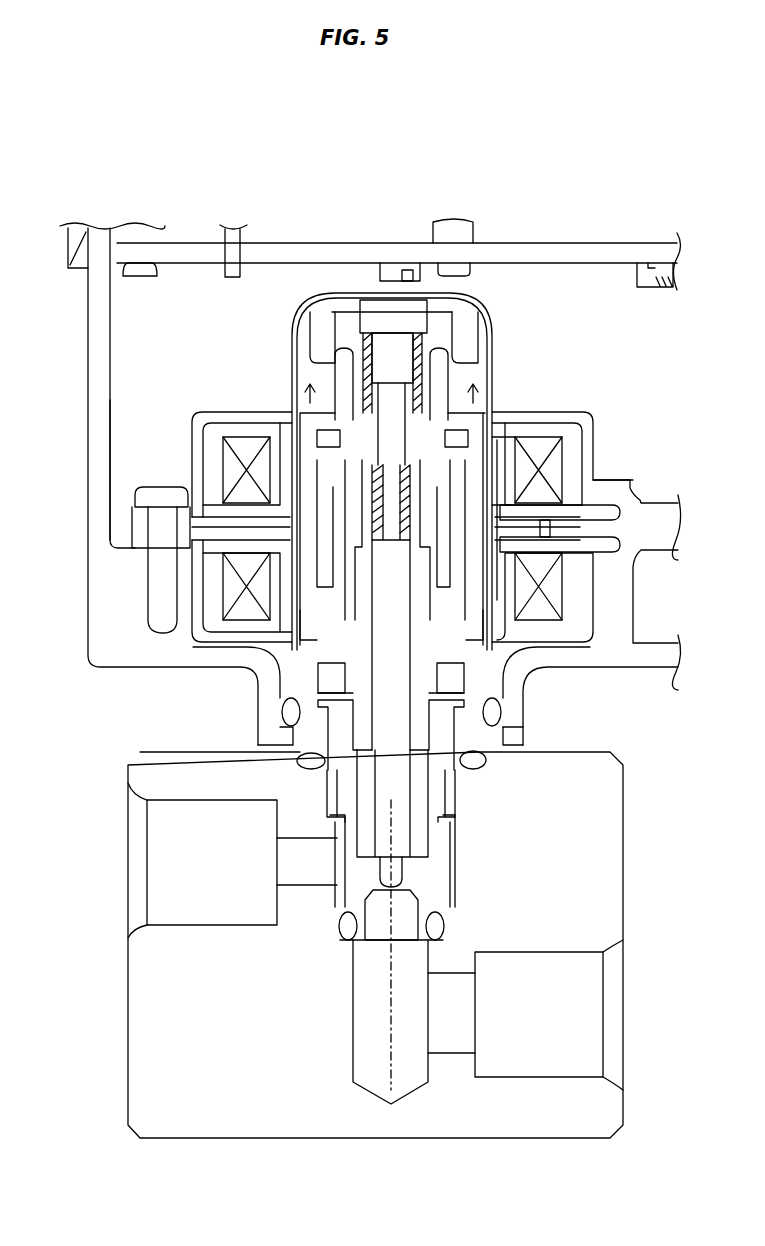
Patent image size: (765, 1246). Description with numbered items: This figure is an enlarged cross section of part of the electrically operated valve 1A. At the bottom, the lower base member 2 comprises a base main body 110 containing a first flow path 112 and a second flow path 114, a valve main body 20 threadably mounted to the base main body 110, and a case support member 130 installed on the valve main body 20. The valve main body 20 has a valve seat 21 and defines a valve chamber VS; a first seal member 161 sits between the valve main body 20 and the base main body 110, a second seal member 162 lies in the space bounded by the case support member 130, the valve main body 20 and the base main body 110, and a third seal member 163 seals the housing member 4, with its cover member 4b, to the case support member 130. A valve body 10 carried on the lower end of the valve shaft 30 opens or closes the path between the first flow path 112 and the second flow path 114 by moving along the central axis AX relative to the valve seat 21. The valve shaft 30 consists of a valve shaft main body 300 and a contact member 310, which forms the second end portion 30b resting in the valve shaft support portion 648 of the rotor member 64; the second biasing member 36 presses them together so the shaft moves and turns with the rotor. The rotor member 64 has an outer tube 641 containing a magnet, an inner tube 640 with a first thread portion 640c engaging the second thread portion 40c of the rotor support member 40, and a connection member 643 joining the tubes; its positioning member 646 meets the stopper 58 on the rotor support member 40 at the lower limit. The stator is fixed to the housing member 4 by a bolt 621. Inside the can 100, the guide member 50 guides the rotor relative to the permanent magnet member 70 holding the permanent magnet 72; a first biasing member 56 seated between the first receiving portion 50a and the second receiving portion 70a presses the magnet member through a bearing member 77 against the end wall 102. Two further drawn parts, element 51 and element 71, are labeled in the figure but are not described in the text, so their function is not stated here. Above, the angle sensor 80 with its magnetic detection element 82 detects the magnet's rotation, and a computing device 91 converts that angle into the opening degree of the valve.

The electrically operated valve 1A is at (462, 165).
The lower base member 2 is at (575, 820).
The housing member 4 is at (88, 500).
The cover member 4b is at (110, 500).
The valve body 10 is at (402, 868).
The valve main body 20 is at (355, 780).
The valve seat 21 is at (391, 872).
The valve shaft 30 is at (372, 640).
The second end portion 30b is at (320, 440).
The second biasing member 36 is at (372, 535).
The rotor support member 40 is at (505, 717).
The second thread portion 40c is at (470, 612).
The guide member 50 is at (378, 380).
The first receiving portion 50a is at (300, 415).
The spring 51 is at (365, 365).
The first biasing member 56 is at (417, 368).
The stopper 58 is at (507, 687).
The rotor member 64 is at (505, 437).
The permanent magnet member 70 is at (452, 323).
The second receiving portion 70a is at (347, 314).
The armature 71 is at (360, 340).
The permanent magnet 72 is at (463, 352).
The bearing member 77 is at (400, 310).
The angle sensor 80 is at (392, 270).
The magnetic detection element 82 is at (404, 270).
The computing device 91 is at (652, 272).
The can 100 is at (457, 300).
The end wall 102 is at (340, 297).
The base main body 110 is at (560, 797).
The first flow path 112 is at (450, 990).
The second flow path 114 is at (300, 877).
The case support member 130 is at (283, 742).
The first seal member 161 is at (440, 925).
The second seal member 162 is at (490, 763).
The third seal member 163 is at (283, 712).
The valve shaft main body 300 is at (470, 470).
The contact member 310 is at (445, 412).
The bolt 621 is at (160, 585).
The inner tube 640 is at (545, 515).
The first thread portion 640c is at (470, 575).
The outer tube 641 is at (540, 497).
The connection member 643 is at (523, 438).
The positioning member 646 is at (490, 638).
The valve shaft support portion 648 is at (290, 468).
The valve chamber VS is at (333, 776).
The central axis AX is at (380, 830).